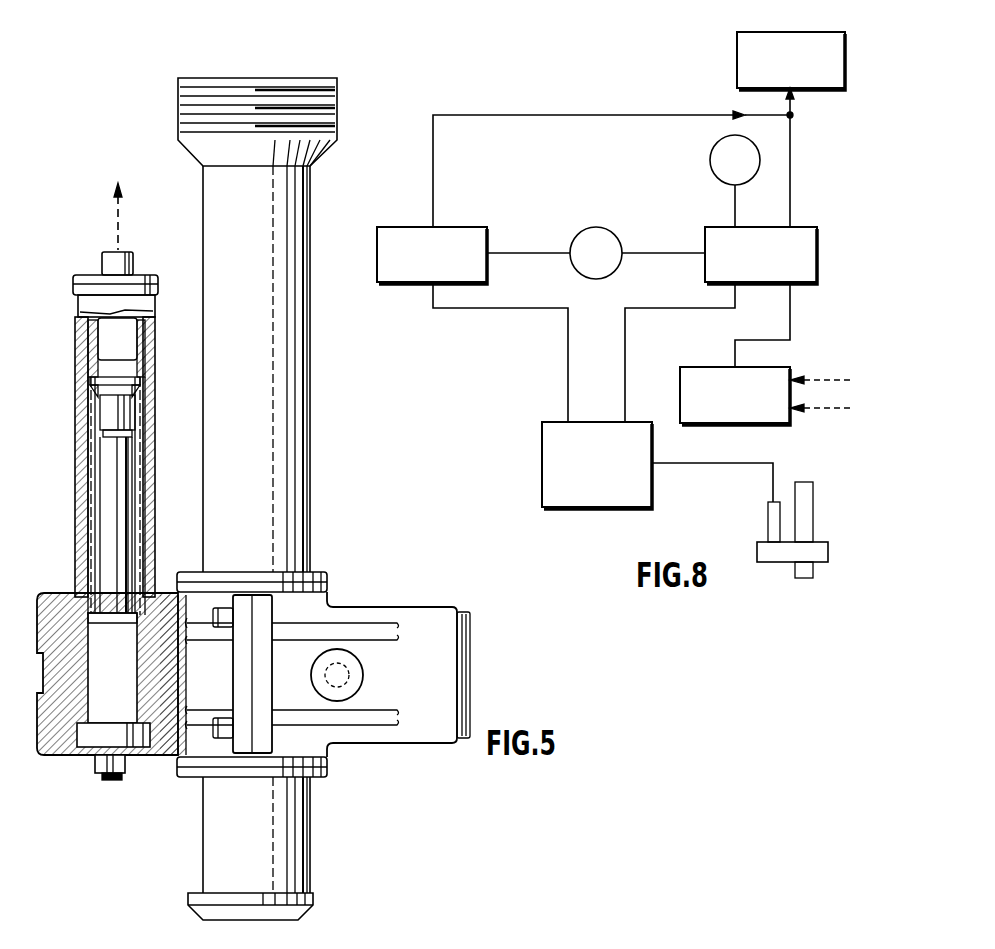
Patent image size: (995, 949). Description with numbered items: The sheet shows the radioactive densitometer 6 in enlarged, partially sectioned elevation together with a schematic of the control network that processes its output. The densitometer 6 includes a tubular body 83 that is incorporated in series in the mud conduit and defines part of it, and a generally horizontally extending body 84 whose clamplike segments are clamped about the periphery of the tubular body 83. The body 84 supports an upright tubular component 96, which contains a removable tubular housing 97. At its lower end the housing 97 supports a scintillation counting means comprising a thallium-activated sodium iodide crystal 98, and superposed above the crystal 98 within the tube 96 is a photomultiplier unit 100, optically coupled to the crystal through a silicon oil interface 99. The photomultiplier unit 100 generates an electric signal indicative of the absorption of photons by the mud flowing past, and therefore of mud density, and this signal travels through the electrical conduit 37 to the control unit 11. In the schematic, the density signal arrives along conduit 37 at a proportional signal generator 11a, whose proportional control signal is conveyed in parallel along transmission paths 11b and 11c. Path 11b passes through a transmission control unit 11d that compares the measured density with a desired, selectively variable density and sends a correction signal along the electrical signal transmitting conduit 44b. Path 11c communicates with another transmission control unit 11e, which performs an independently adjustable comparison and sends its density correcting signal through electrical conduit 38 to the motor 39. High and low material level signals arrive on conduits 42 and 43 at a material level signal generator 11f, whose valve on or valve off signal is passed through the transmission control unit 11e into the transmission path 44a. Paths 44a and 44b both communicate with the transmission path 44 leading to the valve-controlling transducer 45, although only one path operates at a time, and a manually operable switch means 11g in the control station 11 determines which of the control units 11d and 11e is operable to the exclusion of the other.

In FIG. 5, the densitometer 6 is at (50, 672).
In FIG. 8, the densitometer 6 is at (815, 493).
In FIG. 8, the control unit 11 is at (530, 92).
In FIG. 8, the proportional signal generator 11a is at (542, 465).
In FIG. 8, the transmission path 11b is at (568, 337).
In FIG. 8, the transmission path 11c is at (625, 337).
In FIG. 8, the transmission control unit 11d is at (413, 227).
In FIG. 8, the transmission control unit 11e is at (805, 227).
In FIG. 8, the material level signal generator 11f is at (720, 367).
In FIG. 8, the manually operable switch means 11g is at (592, 228).
In FIG. 5, the electrical conduit 37 is at (118, 232).
In FIG. 8, the electrical conduit 37 is at (745, 463).
In FIG. 8, the electrical conduit 38 is at (735, 205).
In FIG. 8, the motor 39 is at (710, 162).
In FIG. 8, the conduit 42 is at (833, 378).
In FIG. 8, the conduit 43 is at (835, 408).
In FIG. 8, the transmission path 44 is at (810, 104).
In FIG. 8, the transmission path 44a is at (790, 162).
In FIG. 8, the electrical signal transmitting conduit 44b is at (433, 160).
In FIG. 8, the valve-controlling transducer 45 is at (737, 55).
In FIG. 5, the tubular body 83 is at (297, 345).
In FIG. 5, the body 84 is at (332, 605).
In FIG. 5, the tubular component 96 is at (76, 458).
In FIG. 5, the tubular housing 97 is at (143, 452).
In FIG. 5, the sodium iodide crystal 98 is at (116, 694).
In FIG. 5, the silicon oil interface 99 is at (97, 638).
In FIG. 5, the photomultiplier unit 100 is at (101, 493).